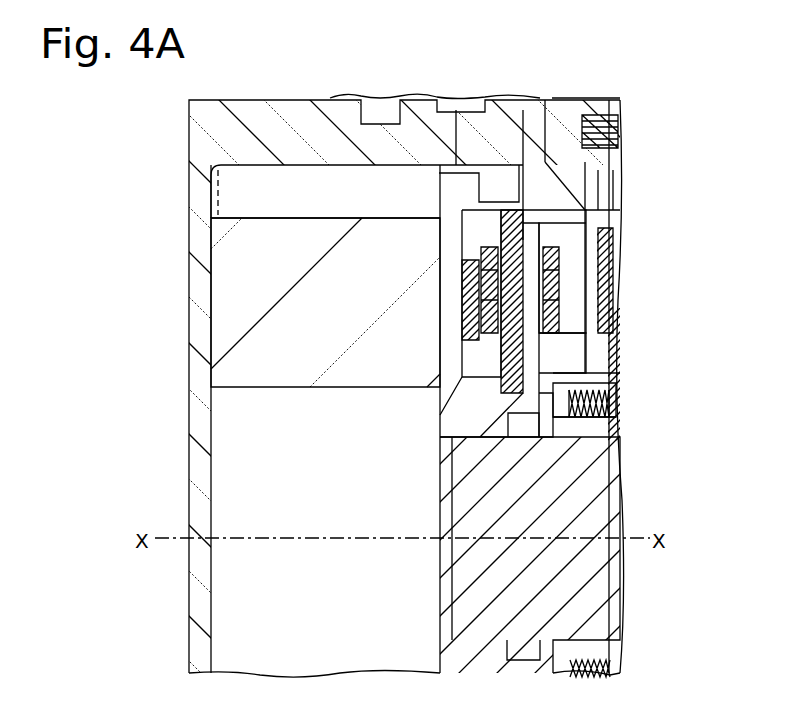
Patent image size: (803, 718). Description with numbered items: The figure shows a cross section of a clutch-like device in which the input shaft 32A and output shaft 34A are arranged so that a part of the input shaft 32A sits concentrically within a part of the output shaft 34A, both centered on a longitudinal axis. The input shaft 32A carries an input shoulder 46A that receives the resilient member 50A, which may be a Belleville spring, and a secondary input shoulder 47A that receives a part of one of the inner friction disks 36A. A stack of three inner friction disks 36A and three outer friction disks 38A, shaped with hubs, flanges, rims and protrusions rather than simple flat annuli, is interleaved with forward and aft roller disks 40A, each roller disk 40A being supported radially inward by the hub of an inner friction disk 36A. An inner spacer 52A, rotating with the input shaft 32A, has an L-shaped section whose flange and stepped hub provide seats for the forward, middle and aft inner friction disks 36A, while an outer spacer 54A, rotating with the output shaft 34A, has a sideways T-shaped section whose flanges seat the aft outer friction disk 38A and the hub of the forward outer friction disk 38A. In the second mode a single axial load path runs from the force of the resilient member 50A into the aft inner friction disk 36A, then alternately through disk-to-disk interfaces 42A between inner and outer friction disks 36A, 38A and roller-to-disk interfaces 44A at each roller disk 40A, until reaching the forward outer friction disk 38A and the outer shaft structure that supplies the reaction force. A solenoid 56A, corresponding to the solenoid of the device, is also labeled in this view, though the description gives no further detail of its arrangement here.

The input shaft 32A is at (565, 500).
The output shaft 34A is at (255, 122).
The inner friction disk 36A is at (594, 328).
The outer friction disk 38A is at (452, 232).
The roller disk 40A is at (485, 276).
The disk-to-disk interface 42A is at (483, 287).
The roller-to-disk interface 44A is at (490, 322).
The input shoulder 46A is at (608, 390).
The secondary input shoulder 47A is at (595, 432).
The resilient member 50A is at (612, 410).
The inner spacer 52A is at (470, 410).
The outer spacer 54A is at (600, 175).
The flange 56A is at (245, 298).